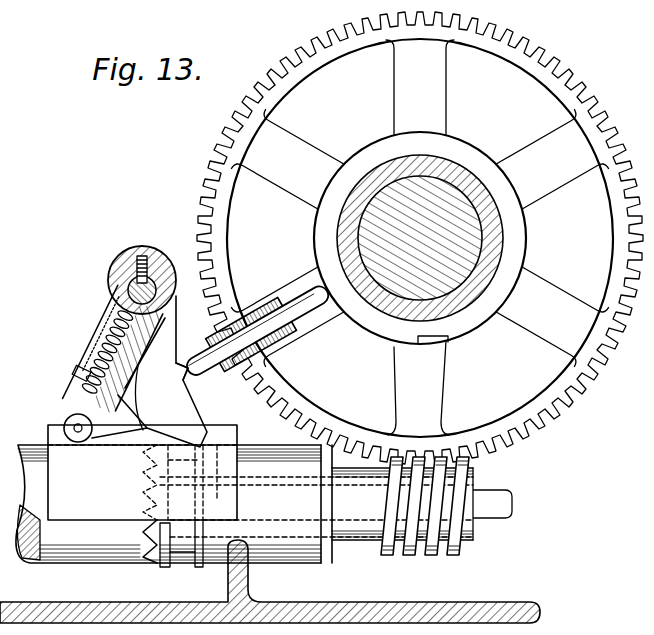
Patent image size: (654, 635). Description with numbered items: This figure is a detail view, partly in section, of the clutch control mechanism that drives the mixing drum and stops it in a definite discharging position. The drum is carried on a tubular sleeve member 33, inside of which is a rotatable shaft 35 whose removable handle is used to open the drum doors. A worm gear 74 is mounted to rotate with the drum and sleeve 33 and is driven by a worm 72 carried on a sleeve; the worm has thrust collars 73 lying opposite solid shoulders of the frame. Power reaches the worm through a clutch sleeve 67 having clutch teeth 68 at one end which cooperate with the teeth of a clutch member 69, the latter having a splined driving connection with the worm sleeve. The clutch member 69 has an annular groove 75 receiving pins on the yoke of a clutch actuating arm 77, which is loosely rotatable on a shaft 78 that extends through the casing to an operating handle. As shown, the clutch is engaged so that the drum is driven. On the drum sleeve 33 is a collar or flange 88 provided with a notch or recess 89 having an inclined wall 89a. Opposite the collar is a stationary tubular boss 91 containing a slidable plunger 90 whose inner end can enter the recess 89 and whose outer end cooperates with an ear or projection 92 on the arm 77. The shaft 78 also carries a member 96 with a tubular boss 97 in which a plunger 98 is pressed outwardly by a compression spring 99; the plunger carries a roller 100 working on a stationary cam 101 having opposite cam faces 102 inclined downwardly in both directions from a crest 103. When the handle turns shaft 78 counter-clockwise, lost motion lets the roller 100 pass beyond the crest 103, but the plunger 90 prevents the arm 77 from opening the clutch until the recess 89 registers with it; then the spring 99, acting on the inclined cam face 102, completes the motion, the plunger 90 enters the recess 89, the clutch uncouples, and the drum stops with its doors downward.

The worm gear 74 is at (552, 403).
The collar or flange 88 is at (368, 160).
The tubular shaft or sleeve member 33 is at (437, 208).
The rotatable shaft 35 is at (452, 205).
The notch or recess 89 is at (427, 346).
The inclined wall 89a is at (448, 341).
The slidable plunger 90 is at (270, 325).
The stationary tubular boss 91 is at (250, 305).
The ear or projection 92 is at (180, 355).
The clutch actuating arm 77 is at (149, 371).
The shaft 78 is at (128, 290).
The member 96 is at (140, 256).
The tubular boss 97 is at (110, 325).
The plunger 98 is at (84, 390).
The compression spring 99 is at (95, 352).
The roller 100 is at (66, 422).
The crest 103 is at (140, 380).
The stationary cam 101 is at (260, 481).
The cam faces 102 is at (150, 448).
The clutch sleeve 67 is at (86, 528).
The clutch teeth 68 is at (143, 552).
The clutch member 69 is at (166, 545).
The annular groove 75 is at (192, 556).
The thrust collars 73 is at (330, 522).
The worm 72 is at (455, 550).